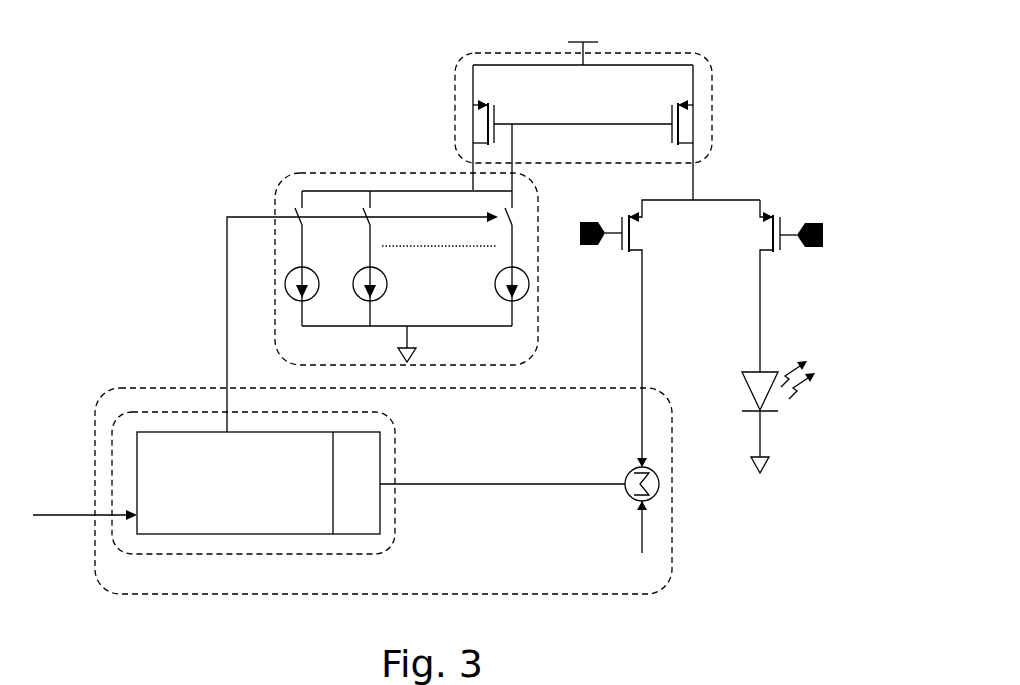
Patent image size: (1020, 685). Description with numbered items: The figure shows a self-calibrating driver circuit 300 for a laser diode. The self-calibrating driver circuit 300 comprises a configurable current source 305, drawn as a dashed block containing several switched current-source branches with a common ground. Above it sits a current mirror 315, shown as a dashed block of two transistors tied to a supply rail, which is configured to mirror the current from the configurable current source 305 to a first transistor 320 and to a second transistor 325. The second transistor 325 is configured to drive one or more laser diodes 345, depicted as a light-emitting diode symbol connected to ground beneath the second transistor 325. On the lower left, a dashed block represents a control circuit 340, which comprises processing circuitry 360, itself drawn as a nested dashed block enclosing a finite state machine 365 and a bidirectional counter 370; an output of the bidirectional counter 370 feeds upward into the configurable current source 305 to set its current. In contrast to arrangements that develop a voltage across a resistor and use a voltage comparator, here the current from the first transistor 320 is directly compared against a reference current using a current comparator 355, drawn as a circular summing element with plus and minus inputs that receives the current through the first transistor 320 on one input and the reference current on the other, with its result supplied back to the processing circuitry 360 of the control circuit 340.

The self-calibrating driver circuit 300 is at (146, 81).
The configurable current source 305 is at (275, 200).
The current mirror 315 is at (483, 52).
The first transistor 320 is at (633, 203).
The second transistor 325 is at (772, 210).
The control circuit 340 is at (153, 594).
The laser diode 345 is at (765, 408).
The current comparator 355 is at (620, 493).
The processing circuitry 360 is at (236, 555).
The finite state machine 365 is at (362, 514).
The bidirectional counter 370 is at (152, 462).